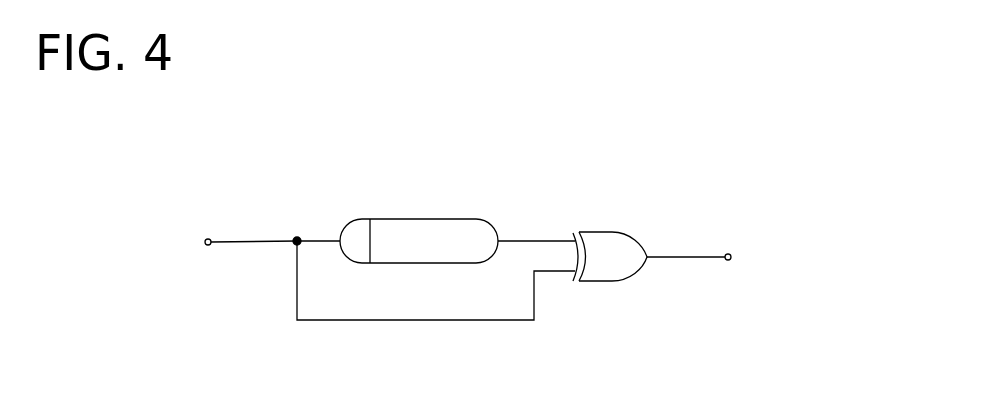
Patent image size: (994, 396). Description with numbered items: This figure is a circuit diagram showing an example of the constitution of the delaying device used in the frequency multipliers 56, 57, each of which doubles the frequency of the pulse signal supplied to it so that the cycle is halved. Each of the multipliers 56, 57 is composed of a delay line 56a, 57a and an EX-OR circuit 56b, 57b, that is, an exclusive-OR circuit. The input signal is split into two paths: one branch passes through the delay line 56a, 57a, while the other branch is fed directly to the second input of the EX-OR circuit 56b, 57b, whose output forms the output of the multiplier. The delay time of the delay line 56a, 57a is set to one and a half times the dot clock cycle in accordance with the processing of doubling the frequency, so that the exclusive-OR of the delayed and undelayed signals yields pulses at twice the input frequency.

The multiplier 56 is at (477, 201).
The multiplier 57 is at (477, 201).
The delay line 56a is at (426, 198).
The delay line 57a is at (425, 228).
The EX-OR circuit 56b is at (670, 216).
The EX-OR circuit 57b is at (621, 240).